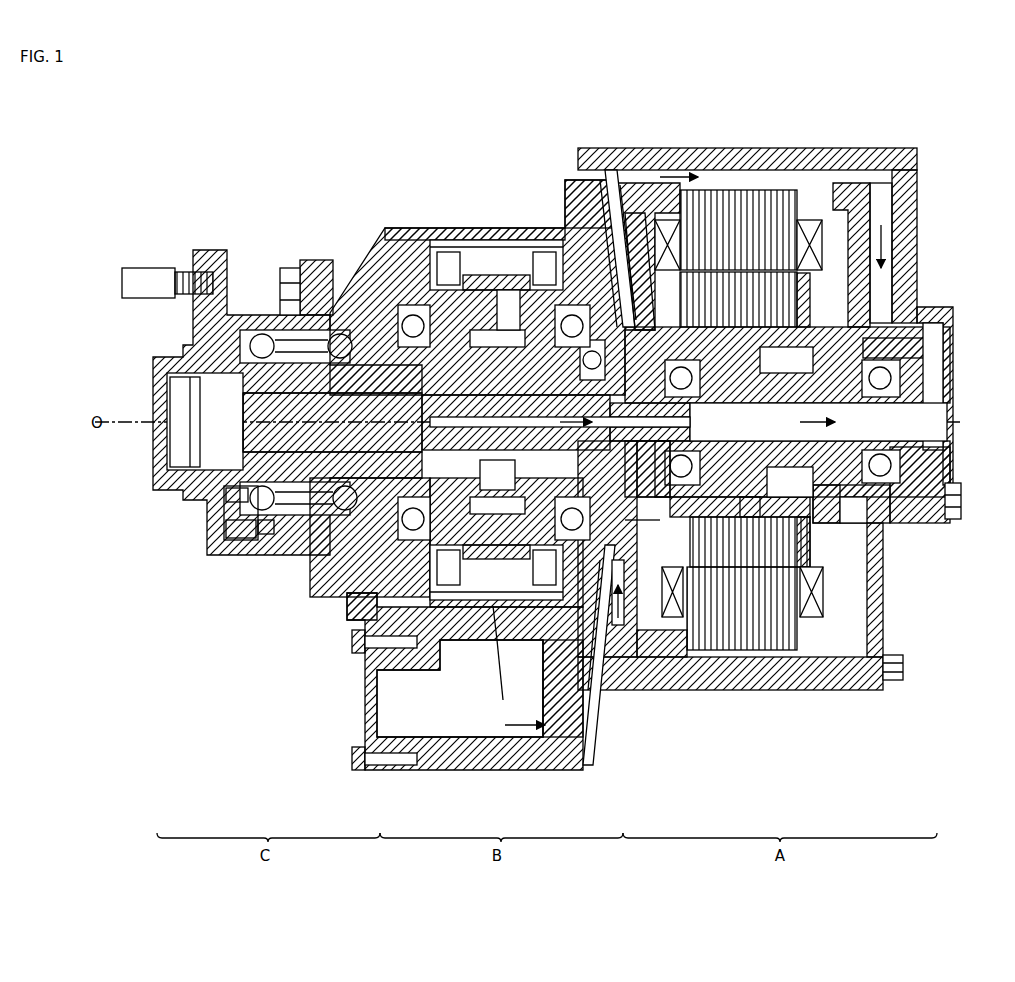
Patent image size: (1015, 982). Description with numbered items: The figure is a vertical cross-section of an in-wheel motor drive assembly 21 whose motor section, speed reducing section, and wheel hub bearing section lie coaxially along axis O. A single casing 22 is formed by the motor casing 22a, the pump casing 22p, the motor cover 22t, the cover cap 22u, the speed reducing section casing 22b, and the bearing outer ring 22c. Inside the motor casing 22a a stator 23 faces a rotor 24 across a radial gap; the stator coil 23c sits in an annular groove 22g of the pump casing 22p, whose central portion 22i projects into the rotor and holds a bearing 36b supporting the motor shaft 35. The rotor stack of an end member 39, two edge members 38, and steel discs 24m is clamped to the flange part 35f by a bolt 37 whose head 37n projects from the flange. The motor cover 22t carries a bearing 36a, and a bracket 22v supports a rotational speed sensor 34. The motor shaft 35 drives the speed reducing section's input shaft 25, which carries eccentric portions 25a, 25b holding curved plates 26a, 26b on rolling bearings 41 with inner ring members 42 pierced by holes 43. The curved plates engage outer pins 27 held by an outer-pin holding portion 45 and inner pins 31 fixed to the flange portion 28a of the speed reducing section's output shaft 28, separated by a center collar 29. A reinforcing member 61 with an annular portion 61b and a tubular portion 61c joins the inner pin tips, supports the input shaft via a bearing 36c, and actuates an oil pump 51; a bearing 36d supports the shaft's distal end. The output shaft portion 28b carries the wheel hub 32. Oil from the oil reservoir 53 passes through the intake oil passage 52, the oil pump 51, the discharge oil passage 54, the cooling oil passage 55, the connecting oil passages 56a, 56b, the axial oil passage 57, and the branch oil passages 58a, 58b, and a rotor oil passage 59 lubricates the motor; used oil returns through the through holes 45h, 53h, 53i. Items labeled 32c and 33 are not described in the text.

The in-wheel motor drive assembly 21 is at (128, 186).
The casing 22 is at (396, 772).
The motor casing 22a is at (796, 690).
The speed reducing section casing 22b is at (420, 226).
The bearing outer ring 22c is at (265, 530).
The annular groove 22g is at (632, 200).
The central portion 22i is at (662, 565).
The pump casing 22p is at (620, 645).
The motor cover 22t is at (915, 240).
The cover cap 22u is at (950, 312).
The bracket 22v is at (858, 305).
The stator 23 is at (719, 190).
The stator coil 23c is at (660, 218).
The rotor 24 is at (790, 283).
The steel discs 24m is at (805, 545).
The speed reducing section's input shaft 25 is at (650, 600).
The eccentric portion 25a is at (365, 596).
The eccentric portion 25b is at (385, 280).
The curved plate 26a is at (562, 226).
The curved plate 26b is at (472, 240).
The outer pins 27 is at (441, 228).
The speed reducing section's output shaft 28 is at (133, 508).
The flange portion 28a is at (222, 560).
The shaft portion 28b is at (225, 505).
The center collar 29 is at (506, 240).
The inner pins 31 is at (432, 300).
The wheel hub 32 is at (170, 352).
The hub bolt 32c is at (122, 268).
The hub bearing 33 is at (262, 335).
The rotational speed sensor 34 is at (905, 345).
The motor shaft 35 is at (930, 515).
The flange part 35f is at (862, 540).
The bearing 36a is at (925, 455).
The bearing 36b is at (748, 560).
The bearing 36c is at (590, 700).
The bearing 36d is at (352, 300).
The bolt 37 is at (850, 575).
The head 37n is at (850, 528).
The edge members 38 is at (818, 558).
The end member 39 is at (648, 530).
The rolling bearing 41 is at (420, 250).
The inner ring members 42 is at (400, 295).
The holes 43 is at (302, 522).
The outer-pin holding portion 45 is at (466, 290).
The through hole 45h is at (497, 640).
The oil pump 51 is at (630, 530).
The intake oil passage 52 is at (563, 720).
The oil reservoir 53 is at (523, 742).
The through hole 53h is at (501, 700).
The through hole 53i is at (601, 742).
The discharge oil passage 54 is at (628, 238).
The cooling oil passage 55 is at (759, 170).
The connecting oil passage 56a is at (892, 207).
The connecting oil passage 56b is at (933, 370).
The axial oil passage 57 is at (935, 432).
The branch oil passage 58a is at (492, 300).
The branch oil passage 58b is at (300, 430).
The rotor oil passage 59 is at (930, 410).
The reinforcing member 61 is at (620, 115).
The annular portion 61b is at (575, 330).
The tubular portion 61c is at (612, 260).